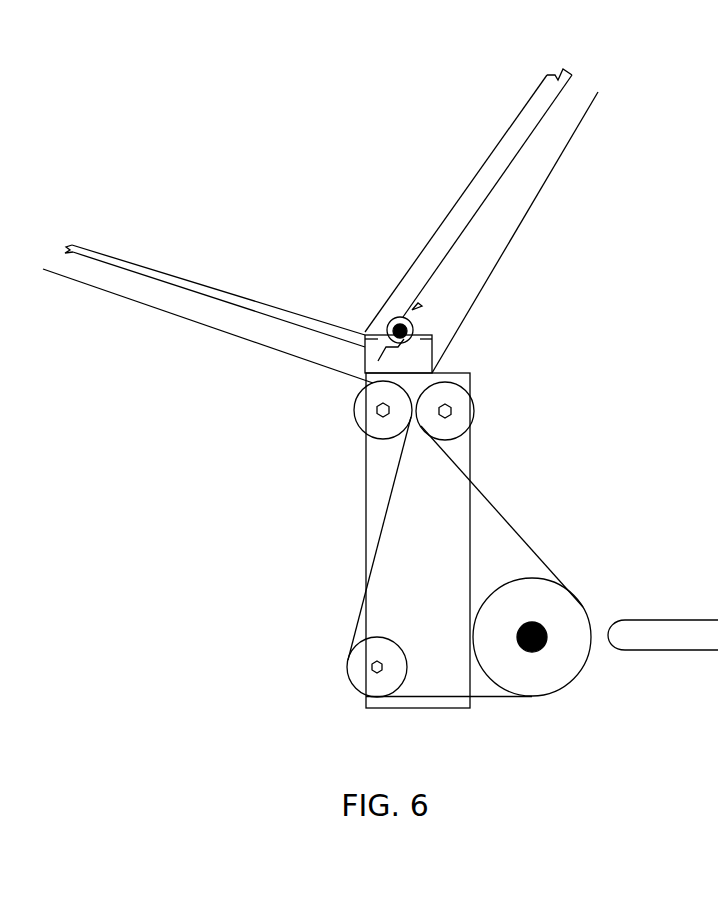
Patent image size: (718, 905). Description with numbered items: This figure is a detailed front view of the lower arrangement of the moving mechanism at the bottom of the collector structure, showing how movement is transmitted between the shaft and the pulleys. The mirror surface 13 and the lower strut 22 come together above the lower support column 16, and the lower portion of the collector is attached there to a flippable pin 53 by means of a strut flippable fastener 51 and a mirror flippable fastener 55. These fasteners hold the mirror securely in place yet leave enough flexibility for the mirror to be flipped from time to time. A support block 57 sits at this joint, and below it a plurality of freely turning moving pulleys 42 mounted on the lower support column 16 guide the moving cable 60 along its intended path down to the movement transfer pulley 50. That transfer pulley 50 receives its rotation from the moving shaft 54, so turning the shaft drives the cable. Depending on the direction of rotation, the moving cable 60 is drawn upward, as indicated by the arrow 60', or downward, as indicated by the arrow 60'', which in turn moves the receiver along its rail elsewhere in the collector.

The mirror surface 13 is at (182, 288).
The lower support column 16 is at (380, 467).
The lower strut 22 is at (473, 195).
The moving pulleys 42 is at (463, 405).
The movement transfer pulley 50 is at (577, 618).
The strut flippable fastener 51 is at (412, 310).
The flippable pin 53 is at (392, 320).
The moving shaft 54 is at (535, 632).
The mirror flippable fastener 55 is at (432, 337).
The support block 57 is at (410, 358).
The moving cable 60 is at (363, 394).
The movement of the moving cable up 60' is at (137, 326).
The movement of the moving cable down 60'' is at (603, 143).